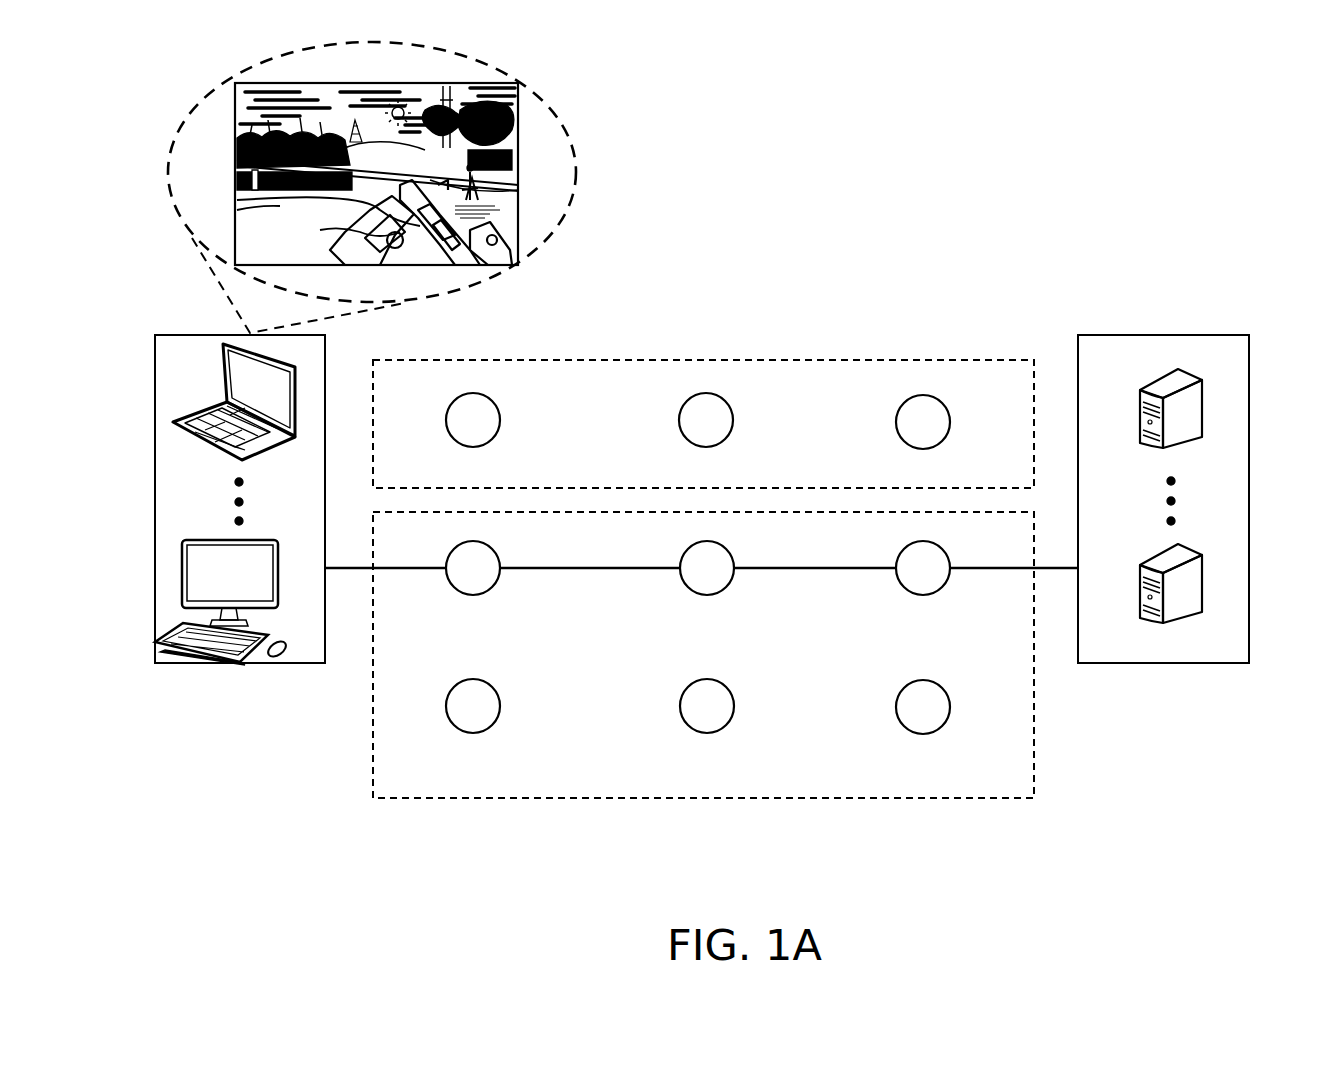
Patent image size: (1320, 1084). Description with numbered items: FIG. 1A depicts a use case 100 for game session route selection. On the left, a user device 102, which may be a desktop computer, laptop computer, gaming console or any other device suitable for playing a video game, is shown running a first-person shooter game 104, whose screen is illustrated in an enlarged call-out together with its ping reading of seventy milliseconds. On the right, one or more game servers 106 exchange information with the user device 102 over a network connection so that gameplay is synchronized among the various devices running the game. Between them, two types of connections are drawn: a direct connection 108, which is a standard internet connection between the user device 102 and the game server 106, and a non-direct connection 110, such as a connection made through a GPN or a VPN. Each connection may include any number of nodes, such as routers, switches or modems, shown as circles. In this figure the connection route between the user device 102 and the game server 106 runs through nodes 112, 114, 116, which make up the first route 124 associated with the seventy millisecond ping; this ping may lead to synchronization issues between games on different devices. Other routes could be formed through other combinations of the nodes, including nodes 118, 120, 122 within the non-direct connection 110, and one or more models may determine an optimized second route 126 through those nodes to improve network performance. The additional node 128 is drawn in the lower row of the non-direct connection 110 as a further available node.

The use case 100 is at (1074, 112).
The user device 102 is at (193, 668).
The first-person shooter game 104 is at (562, 164).
The game server 106 is at (1132, 335).
The direct connection 108 is at (752, 360).
The non-direct connection 110 is at (918, 798).
The node 112 is at (470, 395).
The node 114 is at (700, 372).
The node 116 is at (923, 395).
The node 118 is at (493, 584).
The node 120 is at (725, 585).
The node 122 is at (935, 590).
The first route 124 is at (457, 728).
The second route 126 is at (690, 728).
The network node 128 is at (950, 708).